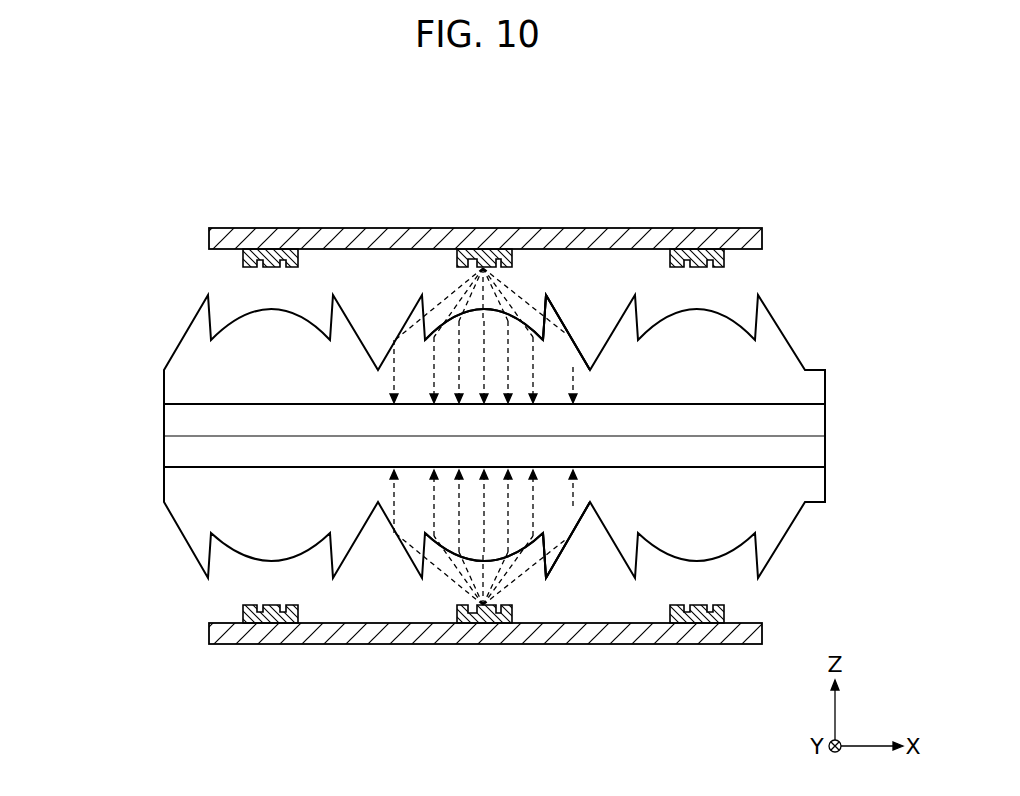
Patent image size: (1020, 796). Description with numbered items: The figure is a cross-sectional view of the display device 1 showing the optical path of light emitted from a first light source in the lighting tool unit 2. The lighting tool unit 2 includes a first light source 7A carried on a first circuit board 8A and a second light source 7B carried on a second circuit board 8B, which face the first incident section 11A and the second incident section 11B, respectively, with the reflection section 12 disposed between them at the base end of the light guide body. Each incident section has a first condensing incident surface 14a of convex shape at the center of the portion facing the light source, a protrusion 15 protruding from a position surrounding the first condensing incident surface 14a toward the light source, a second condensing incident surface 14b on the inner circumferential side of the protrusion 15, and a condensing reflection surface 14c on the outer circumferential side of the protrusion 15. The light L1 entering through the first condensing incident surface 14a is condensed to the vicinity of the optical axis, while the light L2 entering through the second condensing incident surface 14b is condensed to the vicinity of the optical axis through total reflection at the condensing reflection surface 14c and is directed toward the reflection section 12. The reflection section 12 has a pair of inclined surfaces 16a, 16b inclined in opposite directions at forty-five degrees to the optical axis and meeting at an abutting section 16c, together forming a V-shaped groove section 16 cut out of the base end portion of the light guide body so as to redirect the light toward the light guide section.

The display device 1 is at (494, 342).
The lighting tool unit 2 is at (208, 182).
The first light source 7A is at (270, 252).
The second light source 7B is at (273, 620).
The first circuit board 8A is at (762, 238).
The second circuit board 8B is at (762, 633).
The first incident section 11A is at (306, 300).
The second incident section 11B is at (228, 574).
The reflection section 12 is at (416, 433).
The first condensing incident surface 14a is at (495, 310).
The second condensing incident surface 14b is at (543, 308).
The condensing reflection surface 14c is at (560, 318).
The protrusion 15 is at (547, 330).
The V-shaped groove section 16 is at (416, 433).
The inclined surface 16a is at (193, 415).
The inclined surface 16b is at (457, 475).
The abutting section 16c is at (193, 437).
The light L1 is at (562, 347).
The light L2 is at (573, 367).